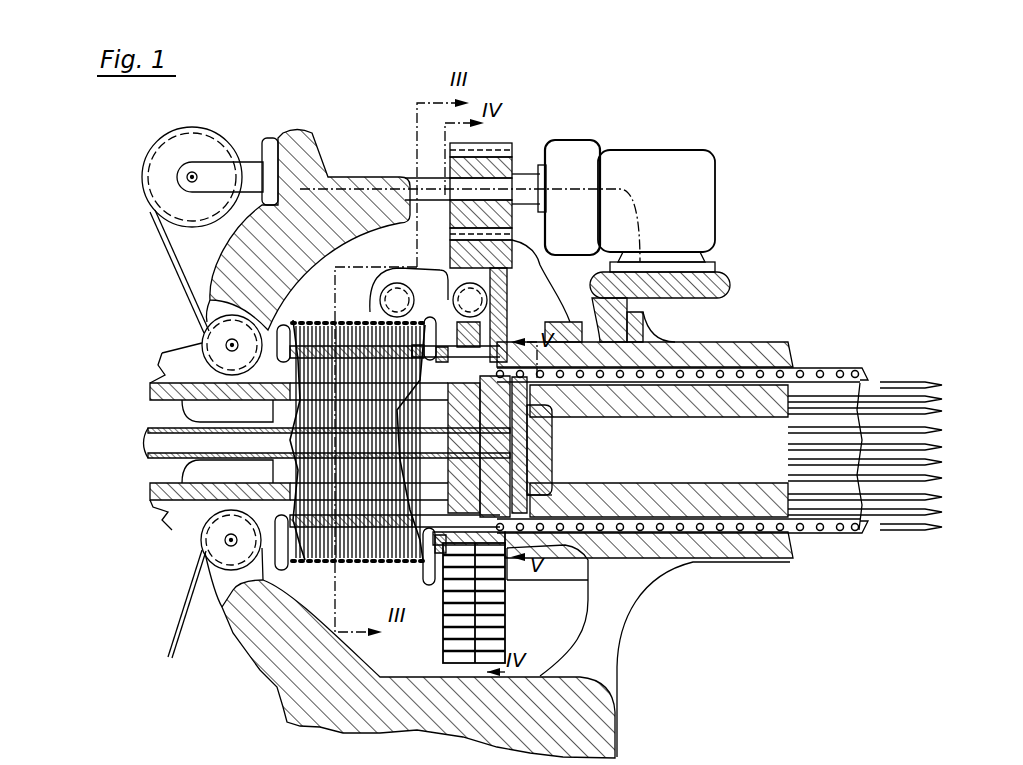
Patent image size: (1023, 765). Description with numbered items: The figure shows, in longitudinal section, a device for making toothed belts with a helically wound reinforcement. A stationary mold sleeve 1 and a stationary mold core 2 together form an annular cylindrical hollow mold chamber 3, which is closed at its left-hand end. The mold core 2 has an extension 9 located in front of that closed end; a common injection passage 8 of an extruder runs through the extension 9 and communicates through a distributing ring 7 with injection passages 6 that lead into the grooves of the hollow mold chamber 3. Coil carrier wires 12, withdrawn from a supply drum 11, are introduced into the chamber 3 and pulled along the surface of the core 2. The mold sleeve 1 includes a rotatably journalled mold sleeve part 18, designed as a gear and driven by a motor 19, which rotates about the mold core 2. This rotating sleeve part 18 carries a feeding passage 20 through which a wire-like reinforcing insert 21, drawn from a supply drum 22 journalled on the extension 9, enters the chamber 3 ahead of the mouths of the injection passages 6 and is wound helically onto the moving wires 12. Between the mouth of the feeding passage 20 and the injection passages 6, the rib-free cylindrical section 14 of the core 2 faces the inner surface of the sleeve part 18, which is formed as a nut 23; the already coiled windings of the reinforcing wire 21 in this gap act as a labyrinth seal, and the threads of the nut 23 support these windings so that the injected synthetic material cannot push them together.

The mold sleeve 1 is at (770, 357).
The mold core 2 is at (705, 372).
The hollow mold chamber 3 is at (693, 397).
The injection passage 6 is at (556, 412).
The distributing ring 7 is at (532, 482).
The common injection passage 8 is at (405, 447).
The extension of the mold core 9 is at (150, 388).
The supply drum 11 is at (160, 164).
The coil carrier wire 12 is at (178, 278).
The cylindrical section of the mold core 14 is at (540, 494).
The mold sleeve part 18 is at (503, 280).
The motor 19 is at (632, 160).
The feeding passage 20 is at (479, 419).
The reinforcing insert 21 is at (425, 290).
The supply drum 22 is at (268, 322).
The nut 23 is at (593, 291).